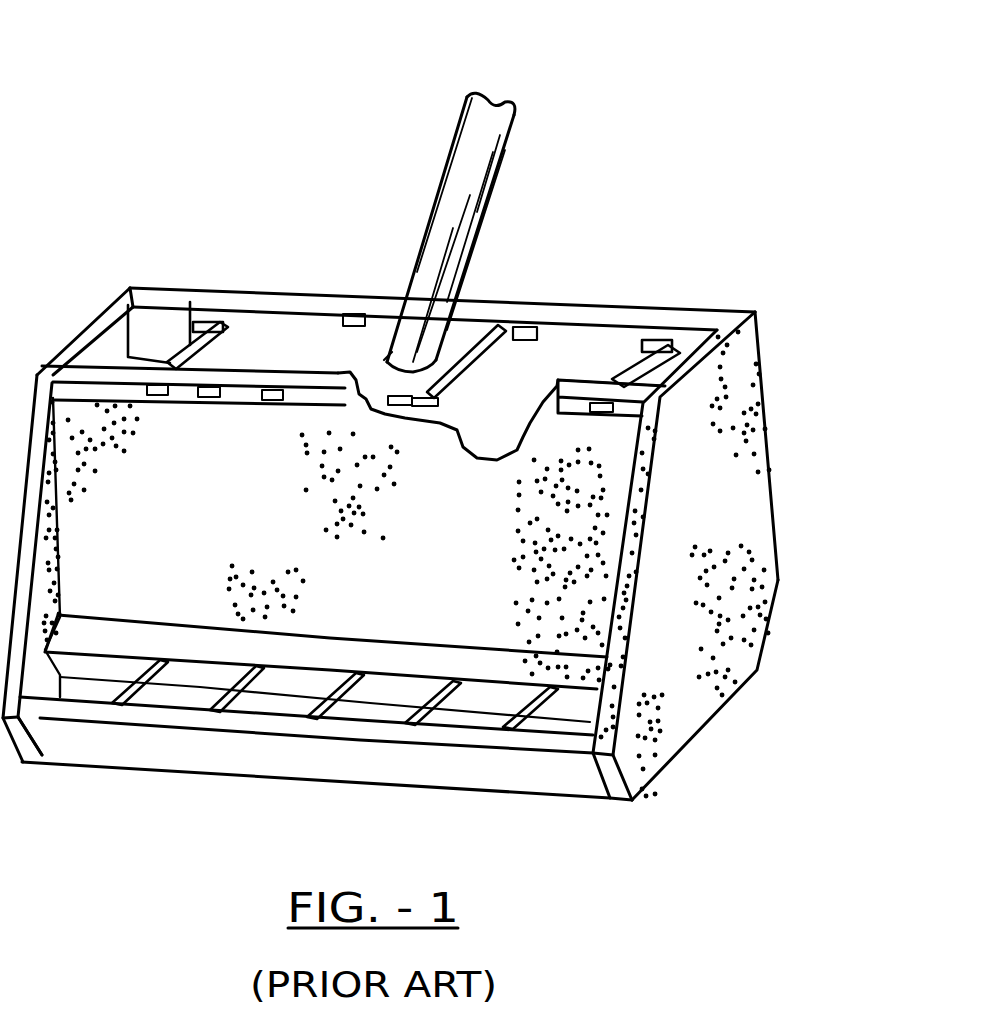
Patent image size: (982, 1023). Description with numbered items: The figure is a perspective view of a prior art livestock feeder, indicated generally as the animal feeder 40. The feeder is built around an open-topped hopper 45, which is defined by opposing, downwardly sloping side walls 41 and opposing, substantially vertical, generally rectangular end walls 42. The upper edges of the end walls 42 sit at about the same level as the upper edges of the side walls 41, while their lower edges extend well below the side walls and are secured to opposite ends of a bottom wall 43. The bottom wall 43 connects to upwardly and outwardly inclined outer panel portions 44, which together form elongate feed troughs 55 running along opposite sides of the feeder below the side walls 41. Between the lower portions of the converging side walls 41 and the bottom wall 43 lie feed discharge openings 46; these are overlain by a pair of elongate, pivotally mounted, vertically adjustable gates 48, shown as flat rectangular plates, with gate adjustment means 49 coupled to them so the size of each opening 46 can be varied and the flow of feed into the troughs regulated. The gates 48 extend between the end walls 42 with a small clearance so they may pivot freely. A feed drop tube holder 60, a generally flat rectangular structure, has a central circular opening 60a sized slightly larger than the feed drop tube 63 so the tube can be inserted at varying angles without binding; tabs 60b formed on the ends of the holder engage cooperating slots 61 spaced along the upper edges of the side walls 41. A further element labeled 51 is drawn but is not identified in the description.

The animal feeder 40 is at (278, 132).
The side walls 41 is at (236, 314).
The end walls 42 is at (742, 488).
The bottom wall 43 is at (703, 727).
The outer panel portions 44 is at (123, 755).
The hopper 45 is at (582, 330).
The feed discharge openings 46 is at (458, 739).
The gates 48 is at (385, 690).
The gate adjustment means 49 is at (194, 332).
The ribs 51 is at (250, 683).
The feed troughs 55 is at (92, 692).
The feed drop tube holder 60 is at (453, 331).
The circular opening 60a is at (388, 354).
The tabs 60b is at (441, 400).
The slots 61 is at (538, 320).
The feed drop tube 63 is at (492, 194).